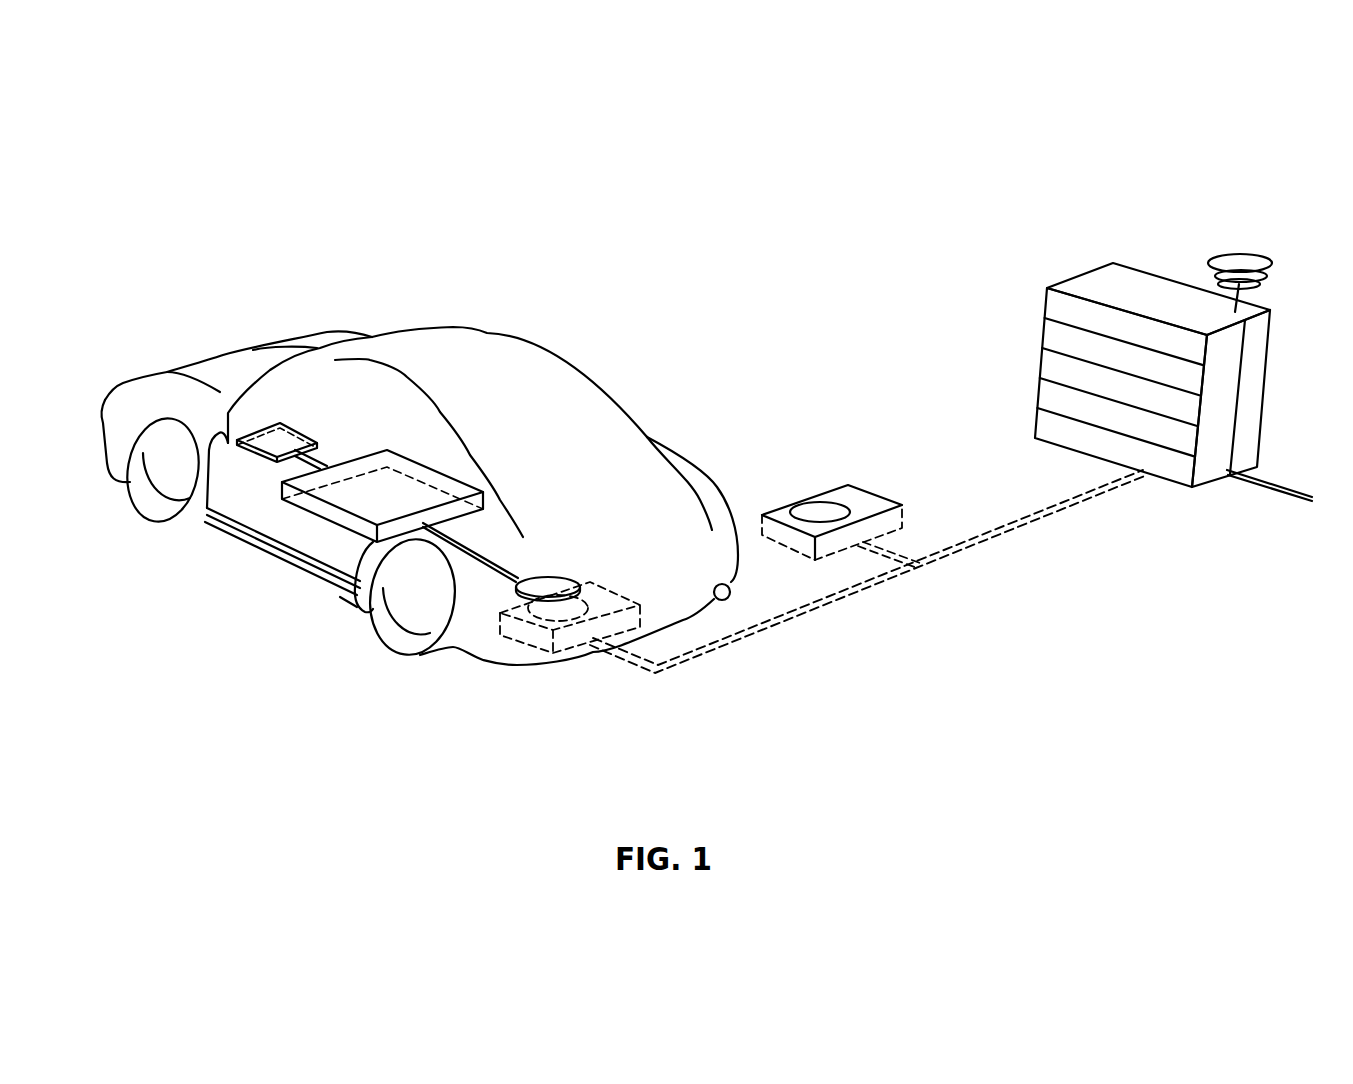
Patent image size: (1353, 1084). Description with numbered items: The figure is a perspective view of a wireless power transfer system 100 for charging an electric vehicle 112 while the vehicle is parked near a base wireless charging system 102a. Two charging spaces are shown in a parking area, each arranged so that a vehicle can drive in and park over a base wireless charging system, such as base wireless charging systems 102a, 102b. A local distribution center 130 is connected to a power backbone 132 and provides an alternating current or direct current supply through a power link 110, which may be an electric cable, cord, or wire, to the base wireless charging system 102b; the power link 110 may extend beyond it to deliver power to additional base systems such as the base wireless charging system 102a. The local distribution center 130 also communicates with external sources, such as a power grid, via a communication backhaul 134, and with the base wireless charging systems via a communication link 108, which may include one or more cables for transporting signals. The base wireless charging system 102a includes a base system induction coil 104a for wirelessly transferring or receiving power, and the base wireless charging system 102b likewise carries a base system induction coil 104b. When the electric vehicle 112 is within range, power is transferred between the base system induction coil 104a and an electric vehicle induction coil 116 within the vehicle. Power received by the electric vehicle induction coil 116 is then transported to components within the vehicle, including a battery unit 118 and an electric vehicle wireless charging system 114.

The wireless power transfer system 100 is at (412, 185).
The electric vehicle 112 is at (215, 358).
The electric vehicle wireless charging system 114 is at (285, 482).
The electric vehicle induction coil 116 is at (550, 580).
The battery unit 118 is at (302, 428).
The base wireless charging system 102a is at (507, 605).
The base system induction coil 104a is at (585, 600).
The base wireless charging system 102b is at (783, 507).
The base system induction coil 104b is at (830, 498).
The communication link 108 is at (1027, 513).
The power link 110 is at (1022, 530).
The local distribution center 130 is at (1080, 280).
The power backbone 132 is at (1285, 493).
The communication backhaul 134 is at (1242, 255).